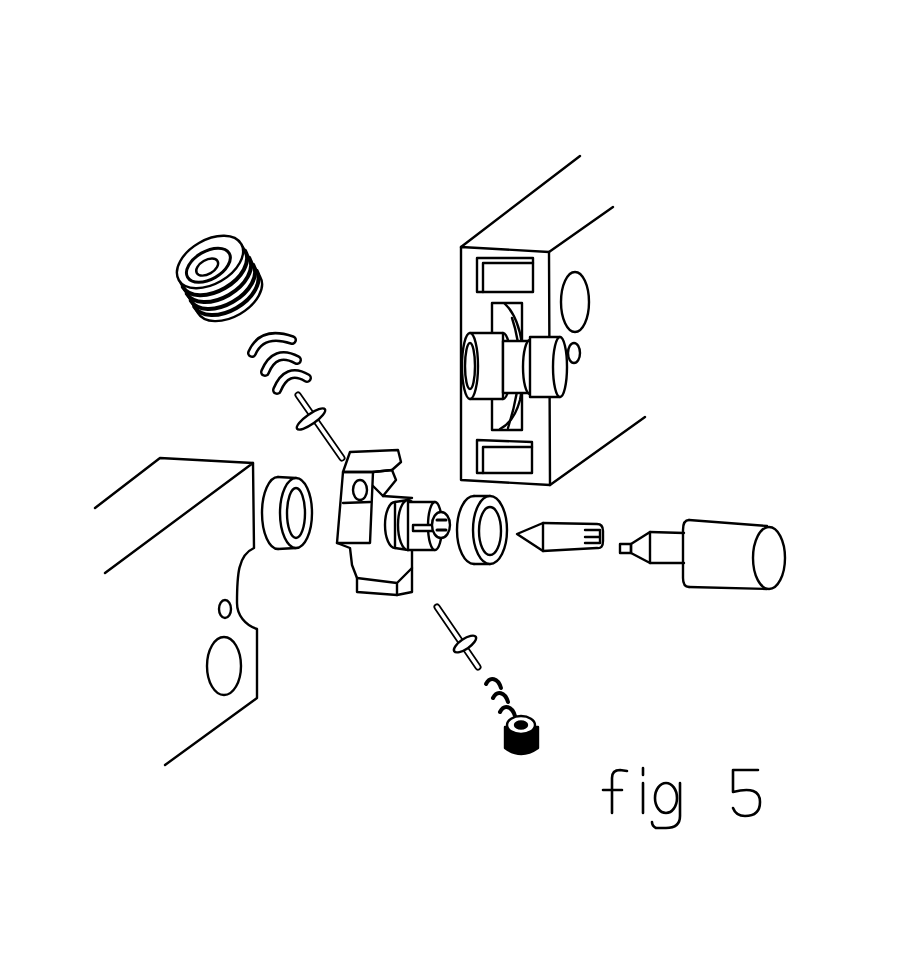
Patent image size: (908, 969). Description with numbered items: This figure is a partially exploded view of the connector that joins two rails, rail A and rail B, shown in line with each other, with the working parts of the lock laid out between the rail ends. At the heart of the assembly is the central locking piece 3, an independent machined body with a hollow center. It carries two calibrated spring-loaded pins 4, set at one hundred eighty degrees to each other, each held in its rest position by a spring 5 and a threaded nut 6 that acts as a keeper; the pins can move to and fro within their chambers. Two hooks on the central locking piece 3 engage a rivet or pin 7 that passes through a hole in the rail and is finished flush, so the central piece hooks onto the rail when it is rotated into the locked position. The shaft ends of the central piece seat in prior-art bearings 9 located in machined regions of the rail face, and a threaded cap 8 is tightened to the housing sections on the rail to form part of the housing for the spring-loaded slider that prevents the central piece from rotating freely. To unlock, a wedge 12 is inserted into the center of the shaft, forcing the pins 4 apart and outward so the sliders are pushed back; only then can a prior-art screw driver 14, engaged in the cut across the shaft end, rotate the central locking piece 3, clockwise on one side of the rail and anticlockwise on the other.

The central locking piece 3 is at (395, 497).
The pin 4 is at (330, 400).
The spring 5 is at (267, 377).
The threaded nut 6 is at (242, 237).
The rivet or pin 7 is at (231, 604).
The threaded cap 8 is at (575, 302).
The bearing 9 is at (477, 565).
The wedge 12 is at (567, 540).
The screw driver 14 is at (808, 487).
The rail A is at (155, 698).
The rail B is at (550, 227).